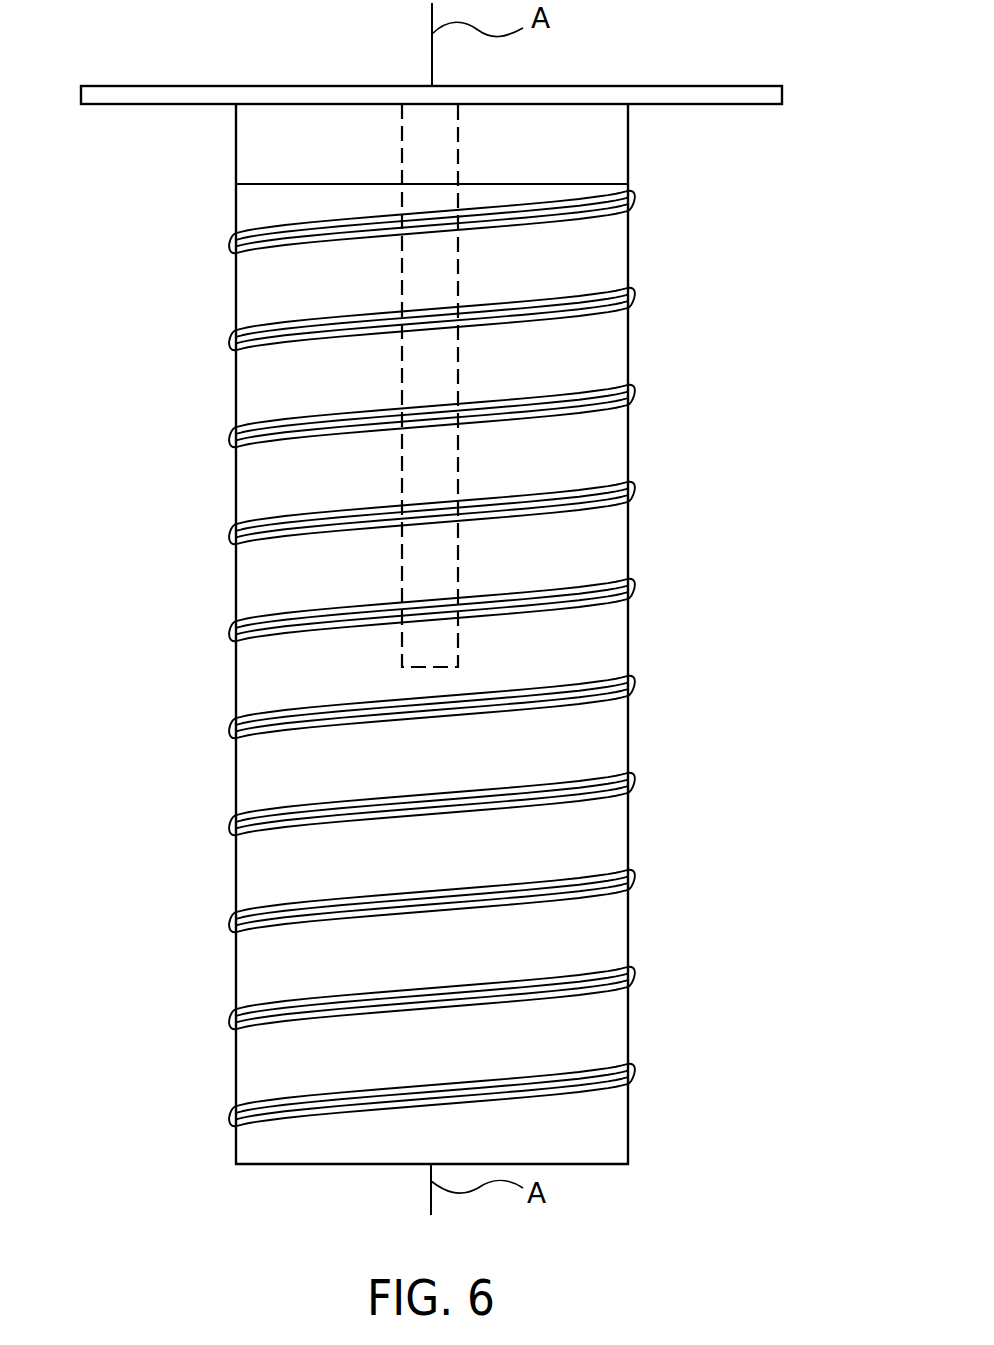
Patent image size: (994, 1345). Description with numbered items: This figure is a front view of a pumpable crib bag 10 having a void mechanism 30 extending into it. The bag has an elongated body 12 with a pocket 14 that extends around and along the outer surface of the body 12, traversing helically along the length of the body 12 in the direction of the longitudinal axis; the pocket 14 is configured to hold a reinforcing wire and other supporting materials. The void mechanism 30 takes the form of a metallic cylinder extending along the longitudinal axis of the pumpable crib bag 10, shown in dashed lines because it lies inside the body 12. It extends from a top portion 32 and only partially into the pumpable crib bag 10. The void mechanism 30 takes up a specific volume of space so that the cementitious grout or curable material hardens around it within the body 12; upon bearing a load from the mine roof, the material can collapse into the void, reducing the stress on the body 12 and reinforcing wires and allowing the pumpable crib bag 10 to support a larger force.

The pumpable crib bag 10 is at (438, 625).
The body 12 is at (603, 547).
The pocket 14 is at (631, 678).
The void mechanism 30 is at (402, 571).
The top portion 32 is at (693, 104).